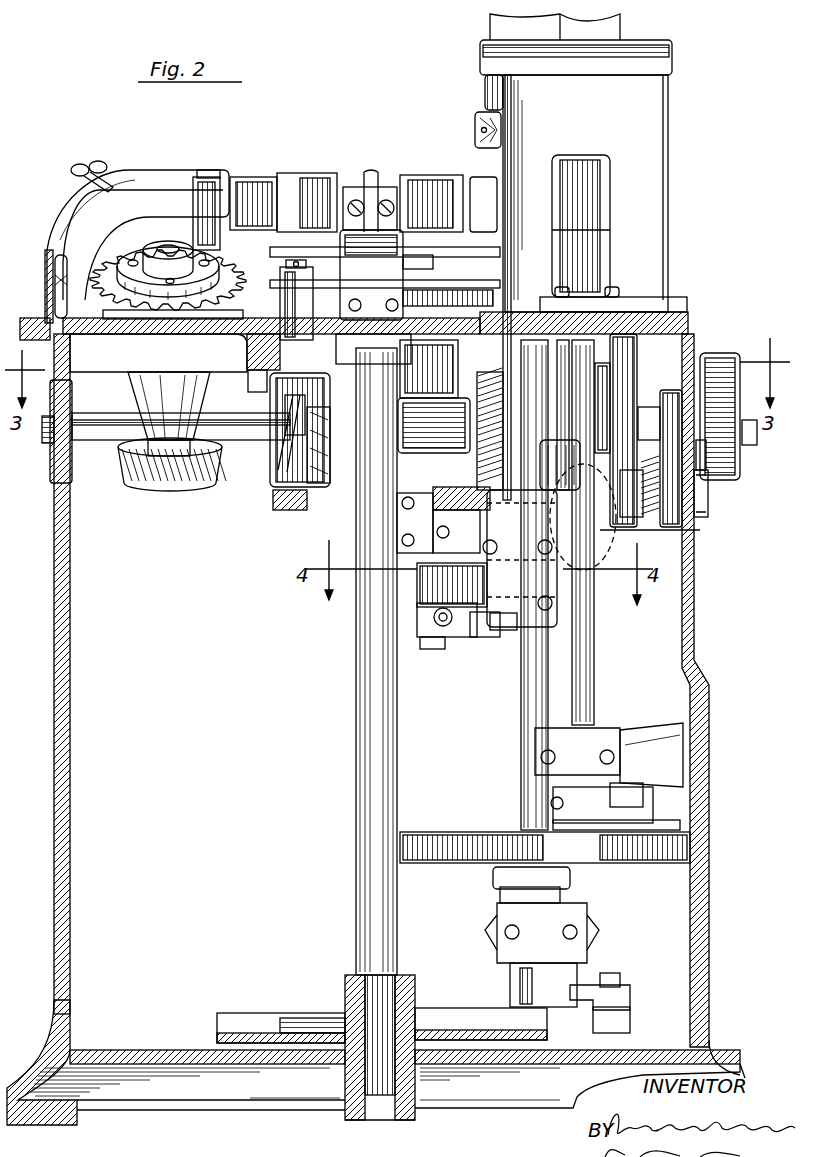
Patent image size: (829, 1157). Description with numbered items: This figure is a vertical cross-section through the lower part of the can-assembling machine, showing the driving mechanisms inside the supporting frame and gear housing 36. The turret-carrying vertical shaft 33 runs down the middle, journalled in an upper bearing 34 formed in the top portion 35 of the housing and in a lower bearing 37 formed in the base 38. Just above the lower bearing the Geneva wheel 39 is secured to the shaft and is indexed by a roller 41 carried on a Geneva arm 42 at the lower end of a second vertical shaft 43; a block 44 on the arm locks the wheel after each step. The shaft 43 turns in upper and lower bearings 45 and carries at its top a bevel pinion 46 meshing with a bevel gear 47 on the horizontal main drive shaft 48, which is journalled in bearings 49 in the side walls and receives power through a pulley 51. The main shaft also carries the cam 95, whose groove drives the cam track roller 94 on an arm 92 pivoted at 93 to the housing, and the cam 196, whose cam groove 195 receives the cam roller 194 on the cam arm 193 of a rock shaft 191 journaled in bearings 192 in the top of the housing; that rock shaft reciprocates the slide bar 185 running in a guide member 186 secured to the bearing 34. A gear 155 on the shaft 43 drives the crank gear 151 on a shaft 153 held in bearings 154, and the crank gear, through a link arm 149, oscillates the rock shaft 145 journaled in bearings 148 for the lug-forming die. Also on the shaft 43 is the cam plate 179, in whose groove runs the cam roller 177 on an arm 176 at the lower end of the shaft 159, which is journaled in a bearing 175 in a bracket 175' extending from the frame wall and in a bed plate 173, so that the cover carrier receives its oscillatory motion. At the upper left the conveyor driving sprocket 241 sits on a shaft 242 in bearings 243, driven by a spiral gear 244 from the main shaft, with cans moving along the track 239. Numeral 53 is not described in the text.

The vertical shaft 33 is at (373, 675).
The upper bearing 34 is at (444, 350).
The top portion 35 is at (690, 312).
The supporting frame and gear housing 36 is at (697, 627).
The lower bearing 37 is at (348, 1113).
The base 38 is at (187, 1055).
The Geneva wheel 39 is at (220, 1030).
The roller 41 is at (613, 1017).
The Geneva arm 42 is at (577, 997).
The vertical shaft 43 is at (537, 692).
The block 44 is at (538, 1023).
The upper and lower bearings 45 is at (585, 553).
The bevel pinion 46 is at (549, 440).
The bevel gear 47 is at (478, 453).
The horizontal shaft 48 is at (40, 428).
The bearings 49 is at (52, 466).
The pulley 51 is at (720, 363).
The clamp 53 is at (371, 185).
The arm 92 is at (682, 548).
The pivot 93 is at (709, 503).
The cam track roller 94 is at (640, 407).
The cam 95 is at (620, 385).
The rock shaft 145 is at (517, 312).
The bearings 148 is at (477, 635).
The link arm 149 is at (500, 628).
The crank gear 151 is at (427, 585).
The shaft 153 is at (430, 493).
The bearings 154 is at (450, 346).
The gear 155 is at (573, 587).
The shaft 159 is at (578, 675).
The bed plate 173 is at (568, 302).
The bearing 175 is at (600, 731).
The bracket 175' is at (696, 740).
The arm 176 is at (660, 808).
The cam roller 177 is at (673, 824).
The cam plate 179 is at (660, 850).
The slide bar 185 is at (325, 293).
The guide member 186 is at (403, 353).
The rock shaft 191 is at (297, 262).
The bearings 192 is at (277, 407).
The cam arm 193 is at (300, 508).
The cam roller 194 is at (280, 475).
The cam groove 195 is at (310, 510).
The cam 196 is at (345, 497).
The track 239 is at (70, 338).
The driving sprocket 241 is at (105, 265).
The shaft 242 is at (168, 245).
The bearings 243 is at (153, 397).
The spiral gear 244 is at (163, 486).